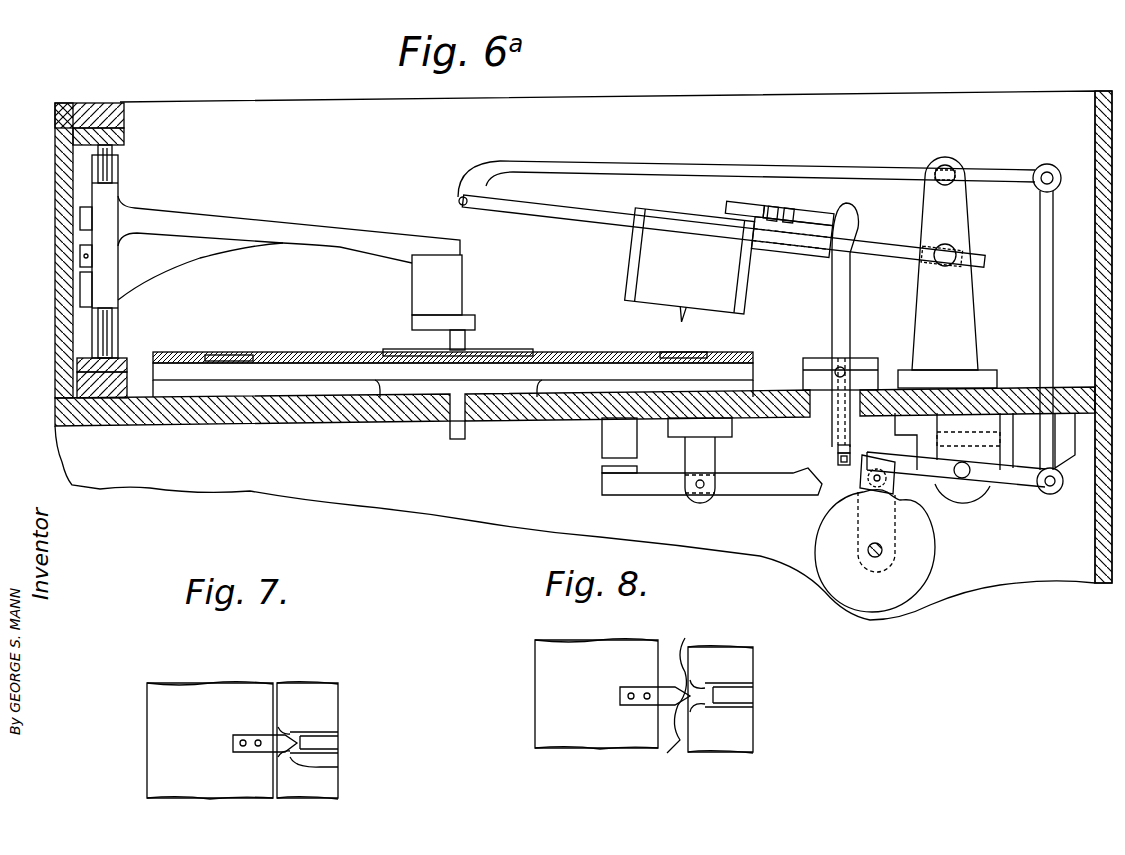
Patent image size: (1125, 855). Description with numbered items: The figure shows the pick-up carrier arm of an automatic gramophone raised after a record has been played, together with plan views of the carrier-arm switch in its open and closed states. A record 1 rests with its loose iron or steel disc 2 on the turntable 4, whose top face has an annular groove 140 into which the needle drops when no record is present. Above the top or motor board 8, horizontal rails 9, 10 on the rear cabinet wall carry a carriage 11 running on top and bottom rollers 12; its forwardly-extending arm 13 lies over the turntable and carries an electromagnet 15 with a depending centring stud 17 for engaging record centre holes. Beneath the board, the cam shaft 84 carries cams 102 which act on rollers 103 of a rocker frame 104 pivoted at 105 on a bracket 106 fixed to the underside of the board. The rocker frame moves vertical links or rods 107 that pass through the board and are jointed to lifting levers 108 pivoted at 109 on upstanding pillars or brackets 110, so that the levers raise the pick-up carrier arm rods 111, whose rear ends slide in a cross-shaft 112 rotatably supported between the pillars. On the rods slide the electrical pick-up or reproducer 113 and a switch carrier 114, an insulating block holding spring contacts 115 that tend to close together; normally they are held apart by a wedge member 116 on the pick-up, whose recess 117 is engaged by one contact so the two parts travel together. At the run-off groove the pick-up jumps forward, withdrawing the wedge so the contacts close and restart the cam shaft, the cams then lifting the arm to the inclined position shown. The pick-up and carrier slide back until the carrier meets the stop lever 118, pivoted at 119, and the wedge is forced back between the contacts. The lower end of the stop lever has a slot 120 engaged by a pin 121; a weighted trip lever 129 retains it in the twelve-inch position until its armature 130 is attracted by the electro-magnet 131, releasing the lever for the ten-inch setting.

In FIG. 6A, the record 1 is at (290, 356).
In FIG. 6A, the loose disc 2 is at (405, 350).
In FIG. 6A, the turntable 4 is at (190, 356).
In FIG. 6A, the top or motor board 8 is at (354, 424).
In FIG. 6A, the horizontal rail 9 is at (125, 143).
In FIG. 6A, the horizontal rail 10 is at (127, 360).
In FIG. 6A, the carriage 11 is at (96, 237).
In FIG. 6A, the rollers 12 is at (112, 167).
In FIG. 6A, the forwardly-extending arm 13 is at (284, 235).
In FIG. 6A, the electromagnet 15 is at (420, 293).
In FIG. 6A, the centring stud 17 is at (462, 342).
In FIG. 6A, the cam shaft 84 is at (868, 550).
In FIG. 6A, the cam 102 is at (920, 575).
In FIG. 6A, the roller 103 is at (856, 486).
In FIG. 6A, the rocker frame 104 is at (1020, 478).
In FIG. 6A, the pivot 105 is at (958, 490).
In FIG. 6A, the bracket 106 is at (983, 443).
In FIG. 6A, the vertical link or rod 107 is at (1045, 290).
In FIG. 6A, the lifting lever 108 is at (610, 170).
In FIG. 6A, the pivot 109 is at (950, 175).
In FIG. 6A, the upstanding pillar or bracket 110 is at (955, 225).
In FIG. 6A, the pick-up carrier arm rod 111 is at (543, 215).
In FIG. 6A, the cross-shaft 112 is at (940, 262).
In FIG. 6A, the electrical pick-up or reproducer 113 is at (650, 252).
In FIG. 7, the electrical pick-up or reproducer 113 is at (168, 693).
In FIG. 8, the electrical pick-up or reproducer 113 is at (567, 657).
In FIG. 6A, the switch carrier 114 is at (795, 240).
In FIG. 7, the switch carrier 114 is at (307, 718).
In FIG. 8, the switch carrier 114 is at (740, 676).
In FIG. 6A, the spring contacts 115 is at (790, 215).
In FIG. 7, the spring contacts 115 is at (285, 732).
In FIG. 8, the spring contacts 115 is at (700, 683).
In FIG. 6A, the wedge member 116 is at (760, 212).
In FIG. 7, the wedge member 116 is at (267, 733).
In FIG. 8, the wedge member 116 is at (670, 700).
In FIG. 7, the recess 117 is at (293, 762).
In FIG. 8, the recess 117 is at (680, 709).
In FIG. 6A, the stop lever 118 is at (834, 298).
In FIG. 6A, the pivot 119 is at (836, 367).
In FIG. 6A, the slot 120 is at (838, 460).
In FIG. 6A, the pin 121 is at (838, 447).
In FIG. 6A, the weighted trip lever 129 is at (733, 490).
In FIG. 6A, the armature 130 is at (606, 476).
In FIG. 6A, the electro-magnet 131 is at (605, 445).
In FIG. 6A, the annular groove 140 is at (676, 353).